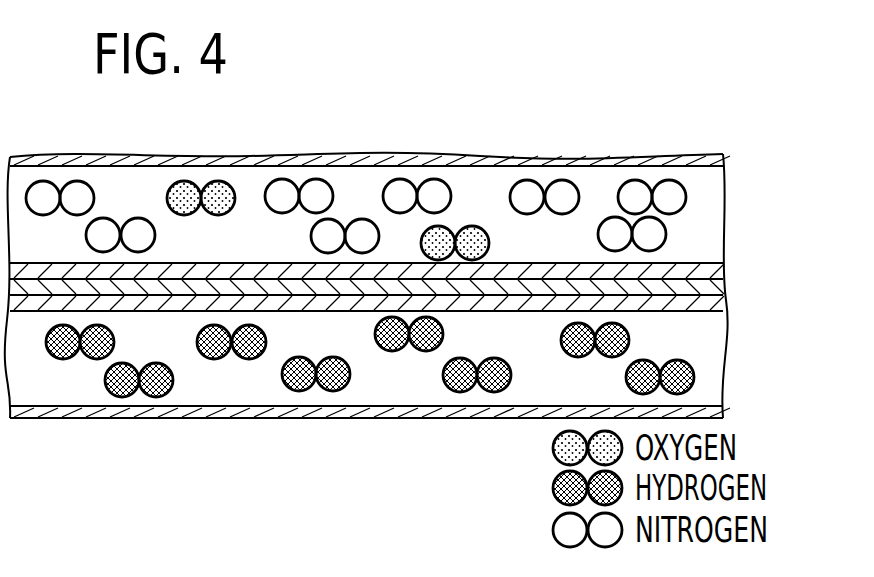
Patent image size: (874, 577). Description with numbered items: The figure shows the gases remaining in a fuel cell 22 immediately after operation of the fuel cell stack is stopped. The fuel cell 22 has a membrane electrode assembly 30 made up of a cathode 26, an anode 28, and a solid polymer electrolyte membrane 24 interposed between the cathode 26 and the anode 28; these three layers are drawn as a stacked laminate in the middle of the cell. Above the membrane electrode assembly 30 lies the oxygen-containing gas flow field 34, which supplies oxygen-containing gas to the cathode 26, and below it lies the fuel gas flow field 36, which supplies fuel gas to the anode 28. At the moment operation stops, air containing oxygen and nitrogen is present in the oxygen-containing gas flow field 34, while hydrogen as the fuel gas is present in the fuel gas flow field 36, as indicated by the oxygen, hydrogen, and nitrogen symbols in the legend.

The fuel cell 22 is at (557, 87).
The solid polymer electrolyte membrane 24 is at (718, 287).
The cathode 26 is at (700, 258).
The anode 28 is at (408, 323).
The membrane electrode assembly 30 is at (439, 290).
The oxygen-containing gas flow field 34 is at (690, 228).
The fuel gas flow field 36 is at (690, 348).